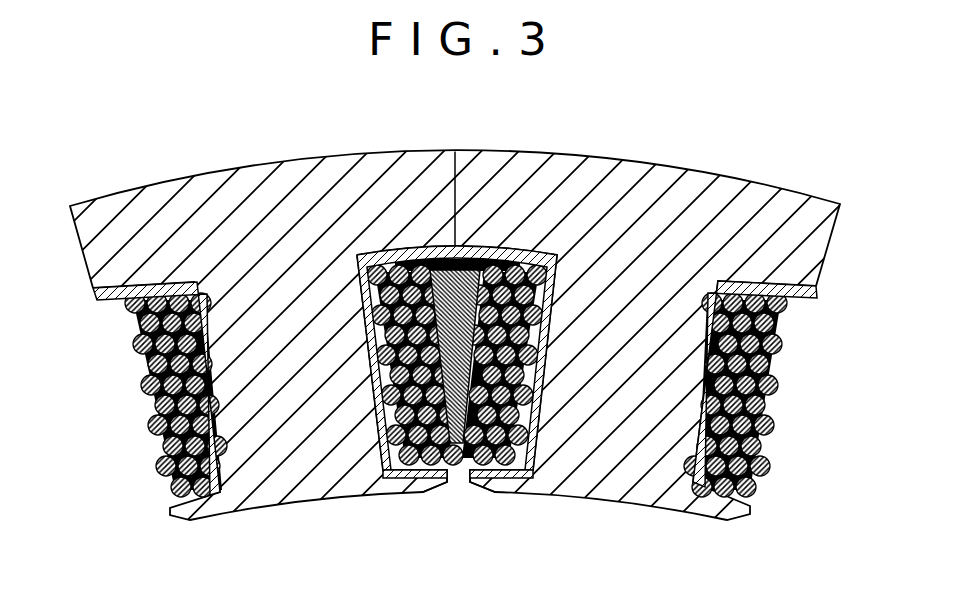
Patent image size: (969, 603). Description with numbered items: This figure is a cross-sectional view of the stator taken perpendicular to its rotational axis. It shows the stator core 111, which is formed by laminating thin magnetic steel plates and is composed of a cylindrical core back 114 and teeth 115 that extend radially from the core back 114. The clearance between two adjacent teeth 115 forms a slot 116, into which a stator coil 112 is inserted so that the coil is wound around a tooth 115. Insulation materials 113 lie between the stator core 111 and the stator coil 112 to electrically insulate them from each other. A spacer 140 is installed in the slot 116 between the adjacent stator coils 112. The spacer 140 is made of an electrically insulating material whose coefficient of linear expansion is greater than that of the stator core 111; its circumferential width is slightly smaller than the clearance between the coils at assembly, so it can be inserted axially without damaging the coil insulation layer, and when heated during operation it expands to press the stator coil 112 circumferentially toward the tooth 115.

The stator core 111 is at (229, 168).
The core back 114 is at (318, 195).
The teeth 115 is at (283, 410).
The stator coil 112 is at (421, 254).
The insulation material 113 is at (403, 471).
The slot 116 is at (457, 465).
The spacer 140 is at (463, 280).